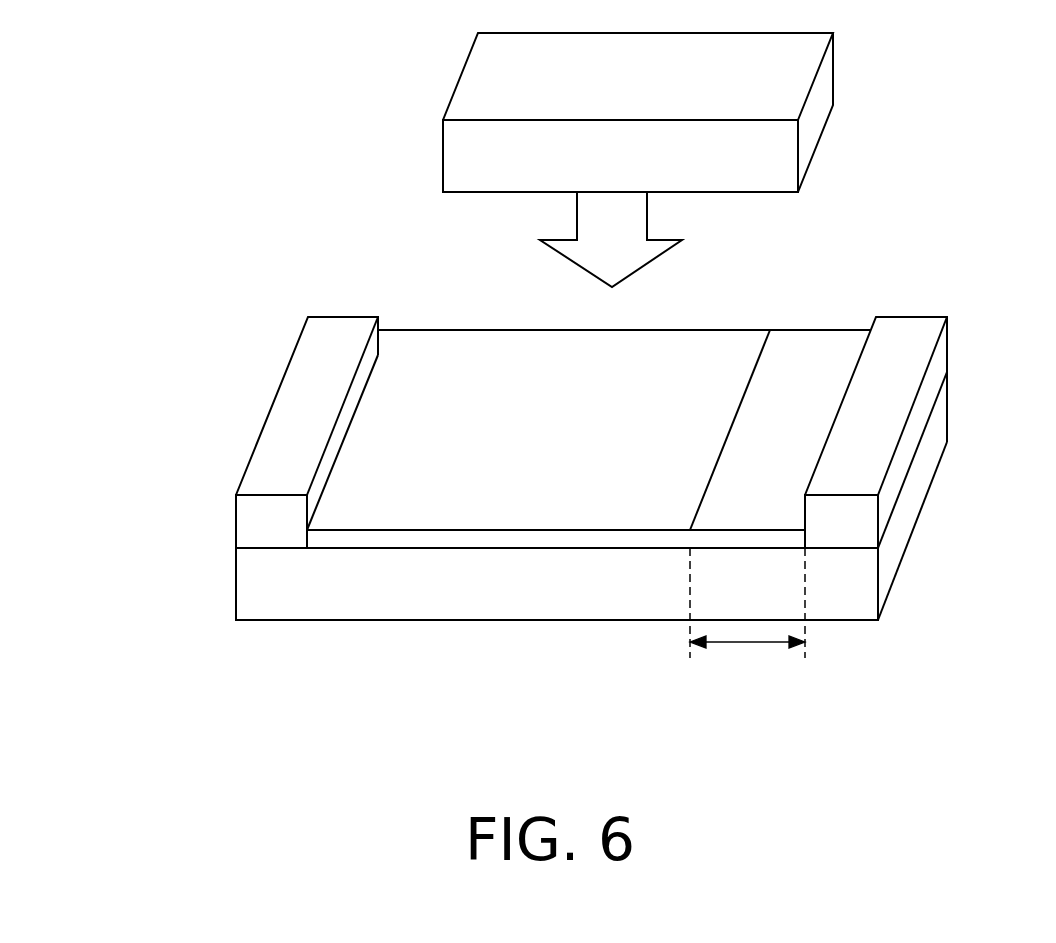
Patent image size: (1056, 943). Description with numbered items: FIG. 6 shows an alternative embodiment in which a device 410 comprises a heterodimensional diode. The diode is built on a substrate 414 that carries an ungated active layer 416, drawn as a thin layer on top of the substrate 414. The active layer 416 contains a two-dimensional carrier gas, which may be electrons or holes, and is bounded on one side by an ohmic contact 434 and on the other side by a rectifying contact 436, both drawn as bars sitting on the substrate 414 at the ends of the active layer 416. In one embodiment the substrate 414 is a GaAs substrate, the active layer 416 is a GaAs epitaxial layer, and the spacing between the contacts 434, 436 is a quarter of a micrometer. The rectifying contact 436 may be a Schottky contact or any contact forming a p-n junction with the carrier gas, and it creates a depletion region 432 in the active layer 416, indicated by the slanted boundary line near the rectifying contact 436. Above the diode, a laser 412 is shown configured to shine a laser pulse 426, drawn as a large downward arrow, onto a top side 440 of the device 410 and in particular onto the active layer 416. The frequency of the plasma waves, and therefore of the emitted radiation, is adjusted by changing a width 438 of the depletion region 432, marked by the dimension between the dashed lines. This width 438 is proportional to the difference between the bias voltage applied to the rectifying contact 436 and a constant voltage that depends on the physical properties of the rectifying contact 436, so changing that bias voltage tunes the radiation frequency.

The device 410 is at (128, 680).
The laser 412 is at (590, 178).
The substrate 414 is at (533, 602).
The active layer 416 is at (353, 538).
The laser pulse 426 is at (589, 255).
The depletion region 432 is at (707, 537).
The ohmic contact 434 is at (262, 478).
The rectifying contact 436 is at (830, 483).
The width 438 is at (747, 642).
The top side 440 is at (373, 234).